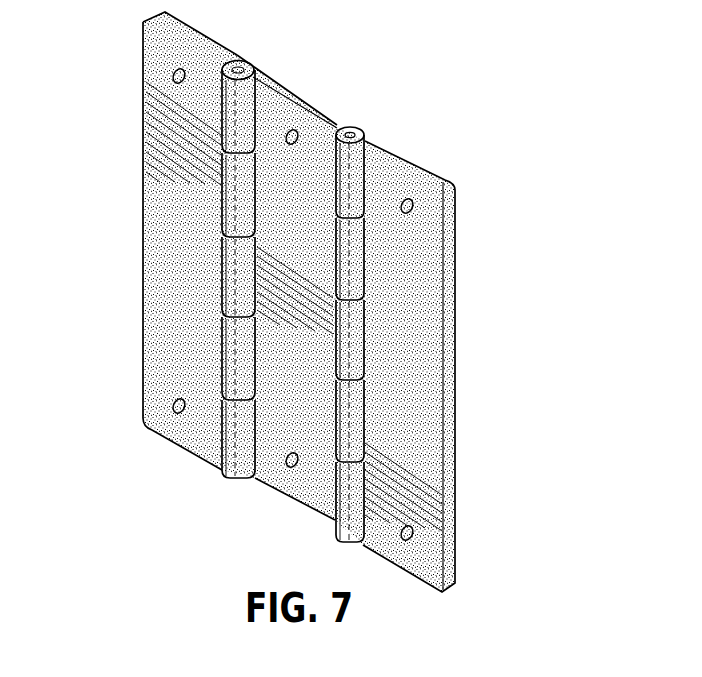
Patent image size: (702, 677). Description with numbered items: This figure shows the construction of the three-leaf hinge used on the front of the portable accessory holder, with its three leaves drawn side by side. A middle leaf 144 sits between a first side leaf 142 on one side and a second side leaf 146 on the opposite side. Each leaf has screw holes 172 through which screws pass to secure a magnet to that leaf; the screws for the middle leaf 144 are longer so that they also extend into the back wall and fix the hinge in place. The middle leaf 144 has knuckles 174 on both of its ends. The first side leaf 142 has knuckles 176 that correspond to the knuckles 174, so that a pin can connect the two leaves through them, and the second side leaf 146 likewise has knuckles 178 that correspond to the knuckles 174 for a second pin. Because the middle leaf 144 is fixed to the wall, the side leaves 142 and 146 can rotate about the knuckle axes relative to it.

The first side leaf 142 is at (160, 316).
The middle leaf 144 is at (311, 140).
The second side leaf 146 is at (418, 382).
The screw holes 172 is at (291, 129).
The knuckles 174 is at (232, 117).
The knuckles 176 is at (232, 192).
The knuckles 178 is at (352, 262).